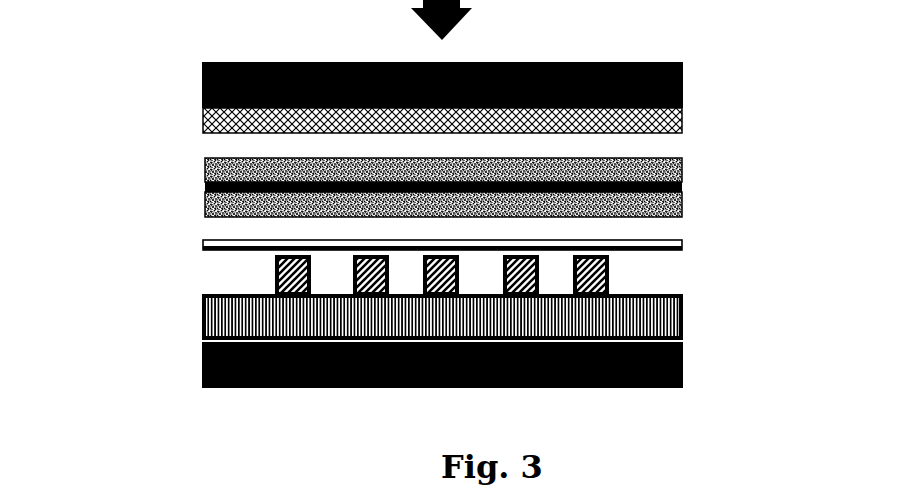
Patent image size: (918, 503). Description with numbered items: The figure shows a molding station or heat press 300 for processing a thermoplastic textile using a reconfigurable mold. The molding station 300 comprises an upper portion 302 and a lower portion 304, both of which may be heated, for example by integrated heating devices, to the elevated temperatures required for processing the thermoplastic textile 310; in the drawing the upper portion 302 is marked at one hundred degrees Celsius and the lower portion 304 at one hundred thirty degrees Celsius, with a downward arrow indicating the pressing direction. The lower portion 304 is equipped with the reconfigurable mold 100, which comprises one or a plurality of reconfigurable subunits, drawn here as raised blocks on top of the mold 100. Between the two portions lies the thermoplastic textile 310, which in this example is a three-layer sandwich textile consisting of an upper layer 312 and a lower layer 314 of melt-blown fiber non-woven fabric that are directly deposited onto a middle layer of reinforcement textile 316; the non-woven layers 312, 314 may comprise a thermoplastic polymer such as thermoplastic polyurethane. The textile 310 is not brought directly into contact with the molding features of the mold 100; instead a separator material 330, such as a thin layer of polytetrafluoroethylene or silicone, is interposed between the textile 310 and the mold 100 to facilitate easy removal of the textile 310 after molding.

The molding station 300 is at (428, 221).
The upper portion 302 is at (640, 61).
The lower portion 304 is at (670, 388).
The thermoplastic textile 310 is at (450, 171).
The upper layer 312 is at (653, 165).
The lower layer 314 is at (483, 229).
The reinforcement textile 316 is at (205, 187).
The separator material 330 is at (230, 241).
The reconfigurable mold 100 is at (653, 310).